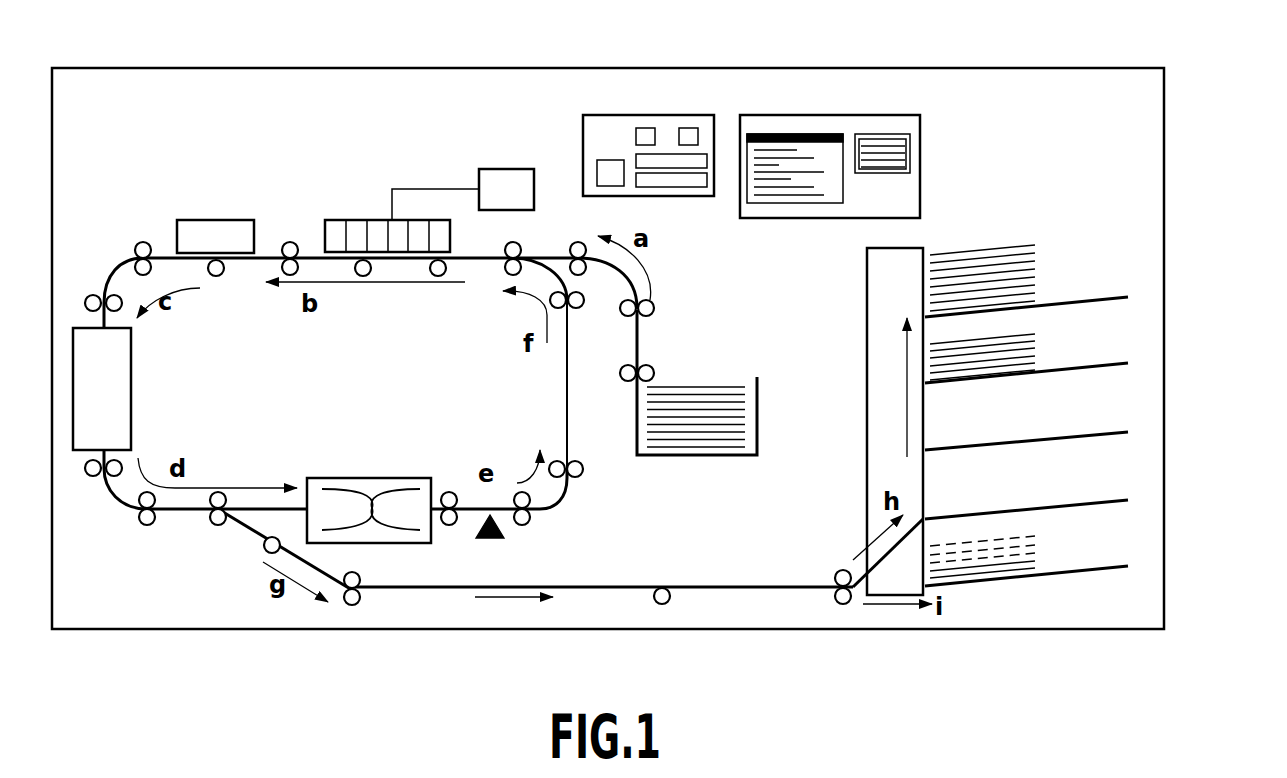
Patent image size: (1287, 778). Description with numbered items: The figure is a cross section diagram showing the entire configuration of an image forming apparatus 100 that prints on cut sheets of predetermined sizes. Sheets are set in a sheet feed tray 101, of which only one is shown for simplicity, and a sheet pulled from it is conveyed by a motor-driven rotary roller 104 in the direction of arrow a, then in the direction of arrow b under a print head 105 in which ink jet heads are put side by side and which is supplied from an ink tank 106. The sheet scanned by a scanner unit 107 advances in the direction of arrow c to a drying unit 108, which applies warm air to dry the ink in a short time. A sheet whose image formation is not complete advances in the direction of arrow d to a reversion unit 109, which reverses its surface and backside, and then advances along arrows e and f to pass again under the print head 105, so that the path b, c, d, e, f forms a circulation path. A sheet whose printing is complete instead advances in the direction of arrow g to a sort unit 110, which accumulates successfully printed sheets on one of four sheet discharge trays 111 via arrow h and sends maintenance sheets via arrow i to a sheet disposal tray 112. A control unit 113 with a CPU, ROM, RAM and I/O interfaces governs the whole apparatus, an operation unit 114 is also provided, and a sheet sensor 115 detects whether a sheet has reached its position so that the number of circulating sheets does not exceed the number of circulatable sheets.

The image forming apparatus 100 is at (87, 67).
The sheet feed tray 101 is at (759, 405).
The rotary roller 104 is at (209, 265).
The print head 105 is at (372, 220).
The ink tank 106 is at (496, 169).
The scanner unit 107 is at (218, 220).
The drying unit 108 is at (132, 383).
The reversion unit 109 is at (330, 478).
The sort unit 110 is at (912, 248).
The sheet discharge tray 111 is at (1128, 500).
The sheet disposal tray 112 is at (1128, 566).
The control unit 113 is at (618, 116).
The operation unit 114 is at (921, 142).
The sheet sensor 115 is at (500, 533).